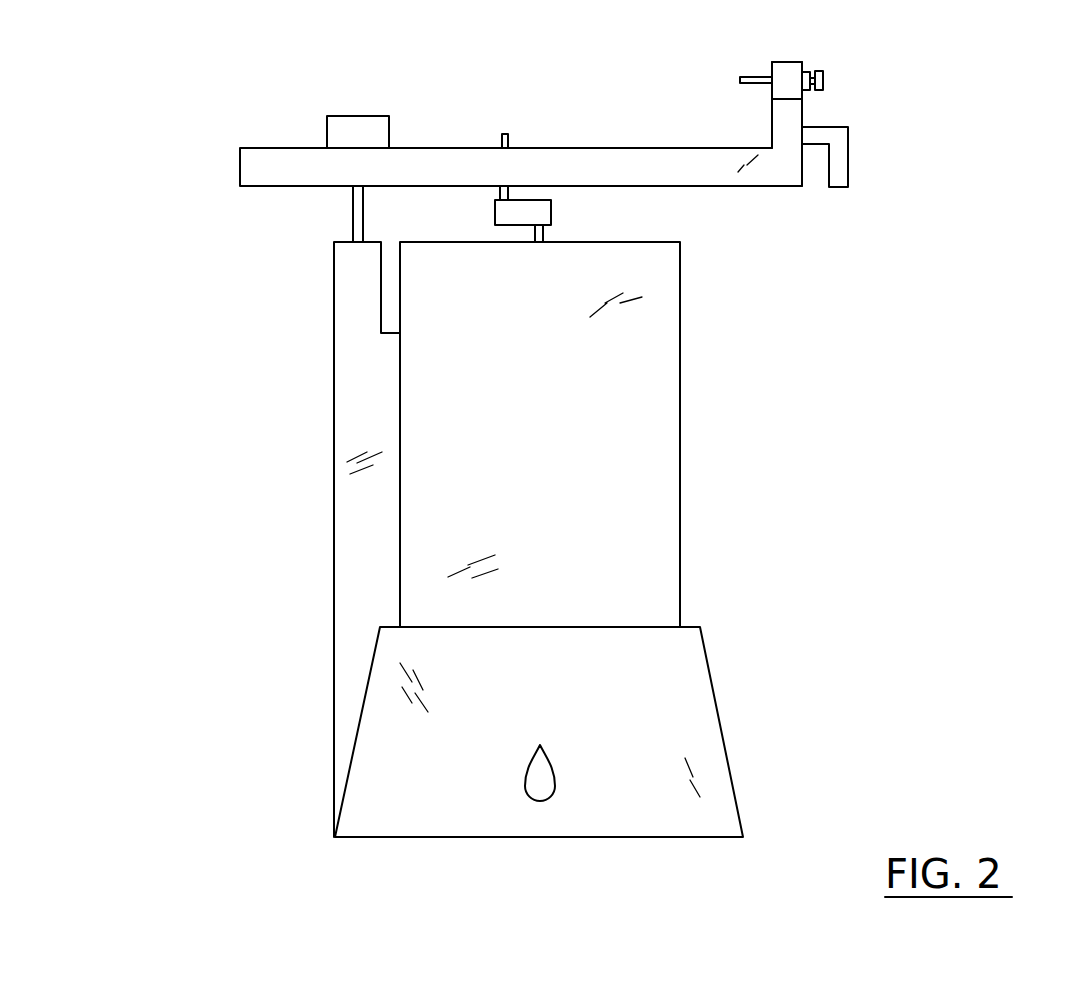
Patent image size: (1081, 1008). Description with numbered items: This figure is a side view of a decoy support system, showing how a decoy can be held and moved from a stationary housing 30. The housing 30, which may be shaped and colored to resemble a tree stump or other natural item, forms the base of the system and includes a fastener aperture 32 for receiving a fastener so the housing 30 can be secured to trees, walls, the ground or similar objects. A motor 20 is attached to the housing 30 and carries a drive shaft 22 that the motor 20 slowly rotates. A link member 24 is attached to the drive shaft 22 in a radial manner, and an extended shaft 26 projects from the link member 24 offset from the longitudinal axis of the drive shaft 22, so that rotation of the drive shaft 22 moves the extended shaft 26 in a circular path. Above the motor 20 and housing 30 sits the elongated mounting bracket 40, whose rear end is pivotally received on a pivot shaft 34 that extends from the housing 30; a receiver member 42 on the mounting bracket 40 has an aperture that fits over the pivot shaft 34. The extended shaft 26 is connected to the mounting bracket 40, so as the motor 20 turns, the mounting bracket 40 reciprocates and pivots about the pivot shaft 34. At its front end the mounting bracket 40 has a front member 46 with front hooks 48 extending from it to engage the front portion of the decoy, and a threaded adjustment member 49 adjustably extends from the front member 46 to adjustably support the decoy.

The motor 20 is at (666, 462).
The drive shaft 22 is at (543, 235).
The link member 24 is at (551, 212).
The extended shaft 26 is at (503, 137).
The housing 30 is at (698, 712).
The fastener apertures 32 is at (537, 782).
The pivot shaft 34 is at (357, 213).
The mounting bracket 40 is at (658, 158).
The receiver member 42 is at (362, 122).
The front member 46 is at (790, 112).
The front hooks 48 is at (843, 173).
The threaded adjustment member 49 is at (823, 80).